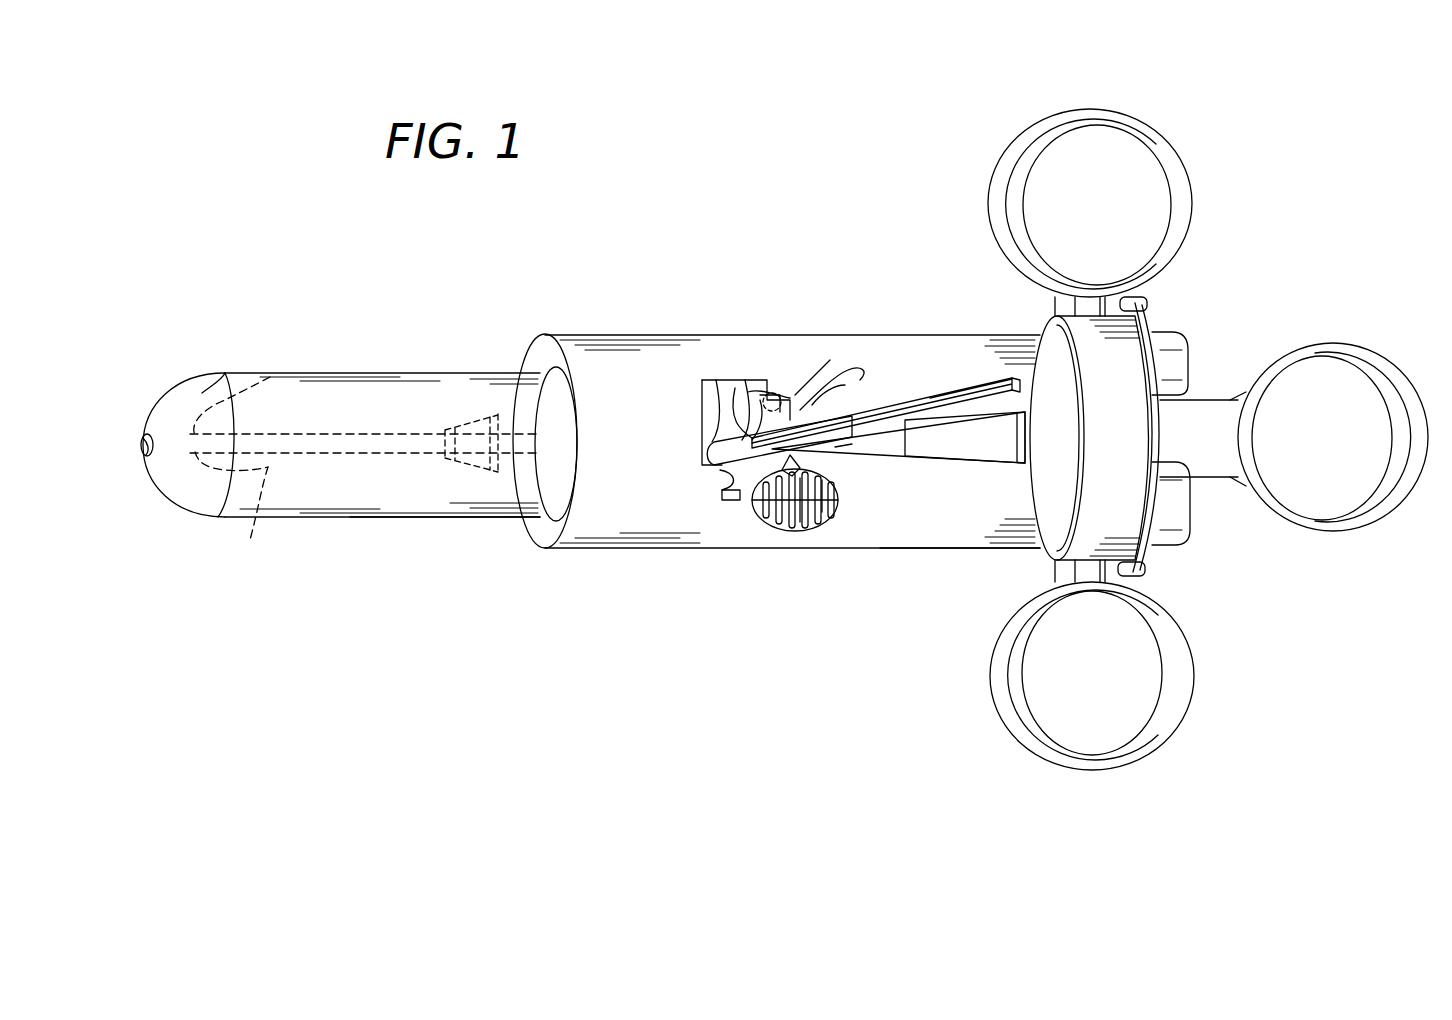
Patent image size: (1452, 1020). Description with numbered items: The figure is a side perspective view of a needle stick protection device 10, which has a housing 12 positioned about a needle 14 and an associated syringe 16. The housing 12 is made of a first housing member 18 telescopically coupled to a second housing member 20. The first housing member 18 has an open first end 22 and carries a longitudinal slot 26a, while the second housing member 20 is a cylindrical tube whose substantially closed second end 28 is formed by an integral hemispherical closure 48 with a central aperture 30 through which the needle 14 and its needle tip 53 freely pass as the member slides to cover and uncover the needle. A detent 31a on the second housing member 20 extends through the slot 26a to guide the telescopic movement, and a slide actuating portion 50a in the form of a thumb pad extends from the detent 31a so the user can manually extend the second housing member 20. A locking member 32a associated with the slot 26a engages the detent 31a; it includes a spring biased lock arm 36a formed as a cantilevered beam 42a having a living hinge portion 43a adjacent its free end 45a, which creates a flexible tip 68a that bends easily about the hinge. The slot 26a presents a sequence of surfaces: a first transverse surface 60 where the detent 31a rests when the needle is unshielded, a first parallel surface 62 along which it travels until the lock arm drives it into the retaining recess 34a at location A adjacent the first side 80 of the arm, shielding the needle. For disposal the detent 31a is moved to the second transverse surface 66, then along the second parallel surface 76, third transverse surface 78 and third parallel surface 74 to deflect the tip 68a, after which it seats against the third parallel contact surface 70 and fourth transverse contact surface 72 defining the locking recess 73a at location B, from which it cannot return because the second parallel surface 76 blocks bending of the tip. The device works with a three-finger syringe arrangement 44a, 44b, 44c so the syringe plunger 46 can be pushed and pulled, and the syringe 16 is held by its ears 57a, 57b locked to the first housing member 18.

The needle stick protection device 10 is at (782, 212).
The housing 12 is at (412, 372).
The needle 14 is at (262, 450).
The syringe 16 is at (1258, 365).
The first housing member 18 is at (578, 345).
The second housing member 20 is at (360, 517).
The open first end 22 is at (1026, 552).
The slot 26a is at (908, 442).
The second end 28 is at (202, 393).
The aperture 30 is at (143, 438).
The detent 31a is at (800, 524).
The locking member 32a is at (980, 424).
The retaining recess 34a is at (745, 502).
The spring biased lock arm 36a is at (950, 410).
The cantilevered beam 42a is at (880, 428).
The living hinge portion 43a is at (760, 390).
The finger hole 44a is at (1187, 183).
The finger hole 44b is at (1188, 672).
The three-finger syringe arrangement element 44c is at (1365, 360).
The free end 45a is at (700, 388).
The syringe plunger 46 is at (1190, 410).
The hemispherical closure 48 is at (187, 494).
The slide actuating portion 50a is at (768, 516).
The needle tip 53 is at (270, 377).
The ear 57a is at (1126, 307).
The ear 57b is at (1146, 568).
The first transverse surface 60 is at (1018, 428).
The first parallel surface 62 is at (748, 392).
The second transverse surface 66 is at (724, 497).
The tip 68a is at (710, 452).
The third parallel contact surface 70 is at (787, 390).
The fourth transverse contact surface 72 is at (826, 406).
The locking recess 73a is at (815, 395).
The third parallel surface 74 is at (733, 387).
The second parallel surface 76 is at (712, 487).
The third transverse surface 78 is at (703, 412).
The first side 80 is at (822, 512).
The location A is at (783, 520).
The location B is at (800, 390).